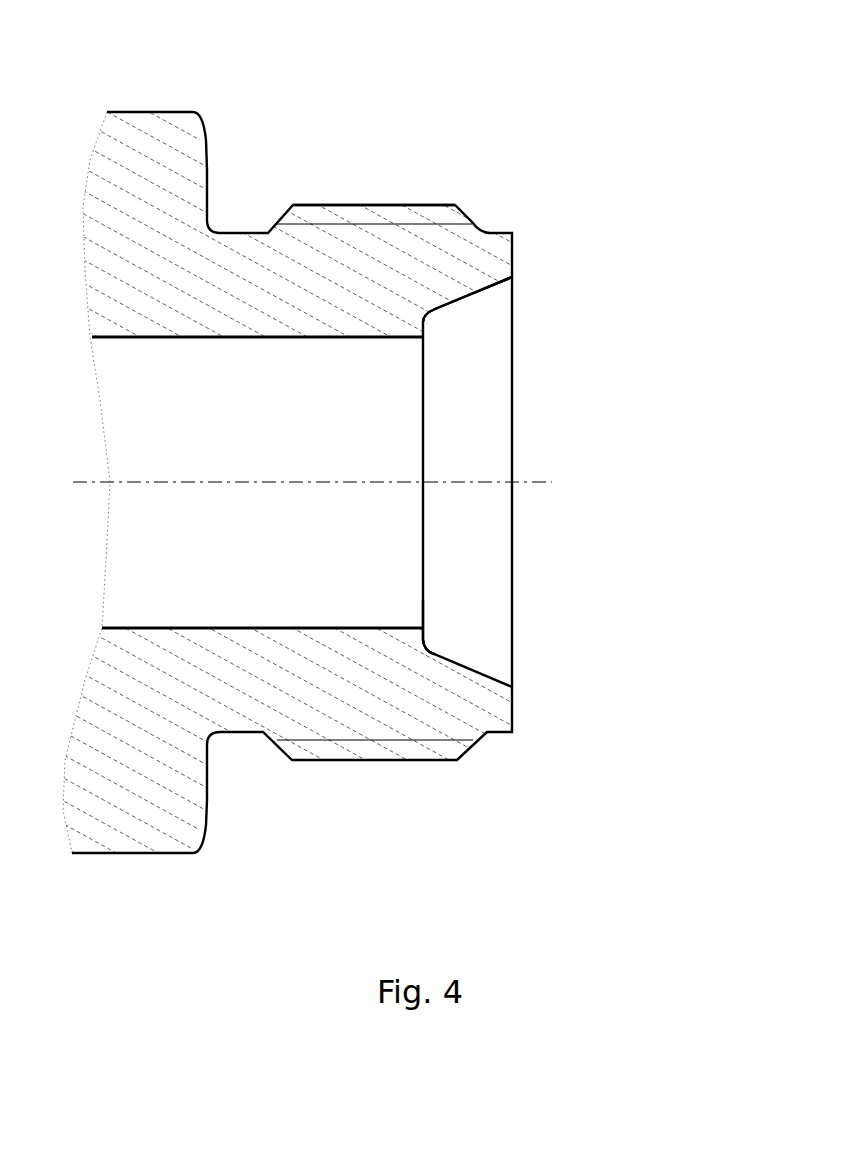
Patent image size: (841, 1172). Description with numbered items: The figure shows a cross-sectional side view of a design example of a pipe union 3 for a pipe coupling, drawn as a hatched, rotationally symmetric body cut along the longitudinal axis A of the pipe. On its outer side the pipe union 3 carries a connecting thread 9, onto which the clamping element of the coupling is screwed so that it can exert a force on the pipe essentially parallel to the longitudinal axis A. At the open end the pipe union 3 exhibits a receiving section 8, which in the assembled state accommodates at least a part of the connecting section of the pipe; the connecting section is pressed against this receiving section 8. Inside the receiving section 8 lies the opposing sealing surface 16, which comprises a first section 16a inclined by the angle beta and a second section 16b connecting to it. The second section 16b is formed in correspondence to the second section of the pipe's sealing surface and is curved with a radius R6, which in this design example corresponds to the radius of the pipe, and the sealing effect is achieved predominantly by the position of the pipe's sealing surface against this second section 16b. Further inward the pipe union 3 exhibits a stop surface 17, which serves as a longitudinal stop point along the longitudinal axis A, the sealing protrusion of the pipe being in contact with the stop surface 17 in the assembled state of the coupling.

The pipe union 3 is at (157, 183).
The connecting thread 9 is at (305, 220).
The opposing sealing surface 16 is at (453, 299).
The first section of the opposing sealing surface 16a is at (486, 288).
The second section of the opposing sealing surface 16b is at (423, 313).
The stop surface 17 is at (424, 633).
The radius of the second section R6 is at (429, 650).
The receiving section 8 is at (483, 643).
The longitudinal axis A is at (299, 482).